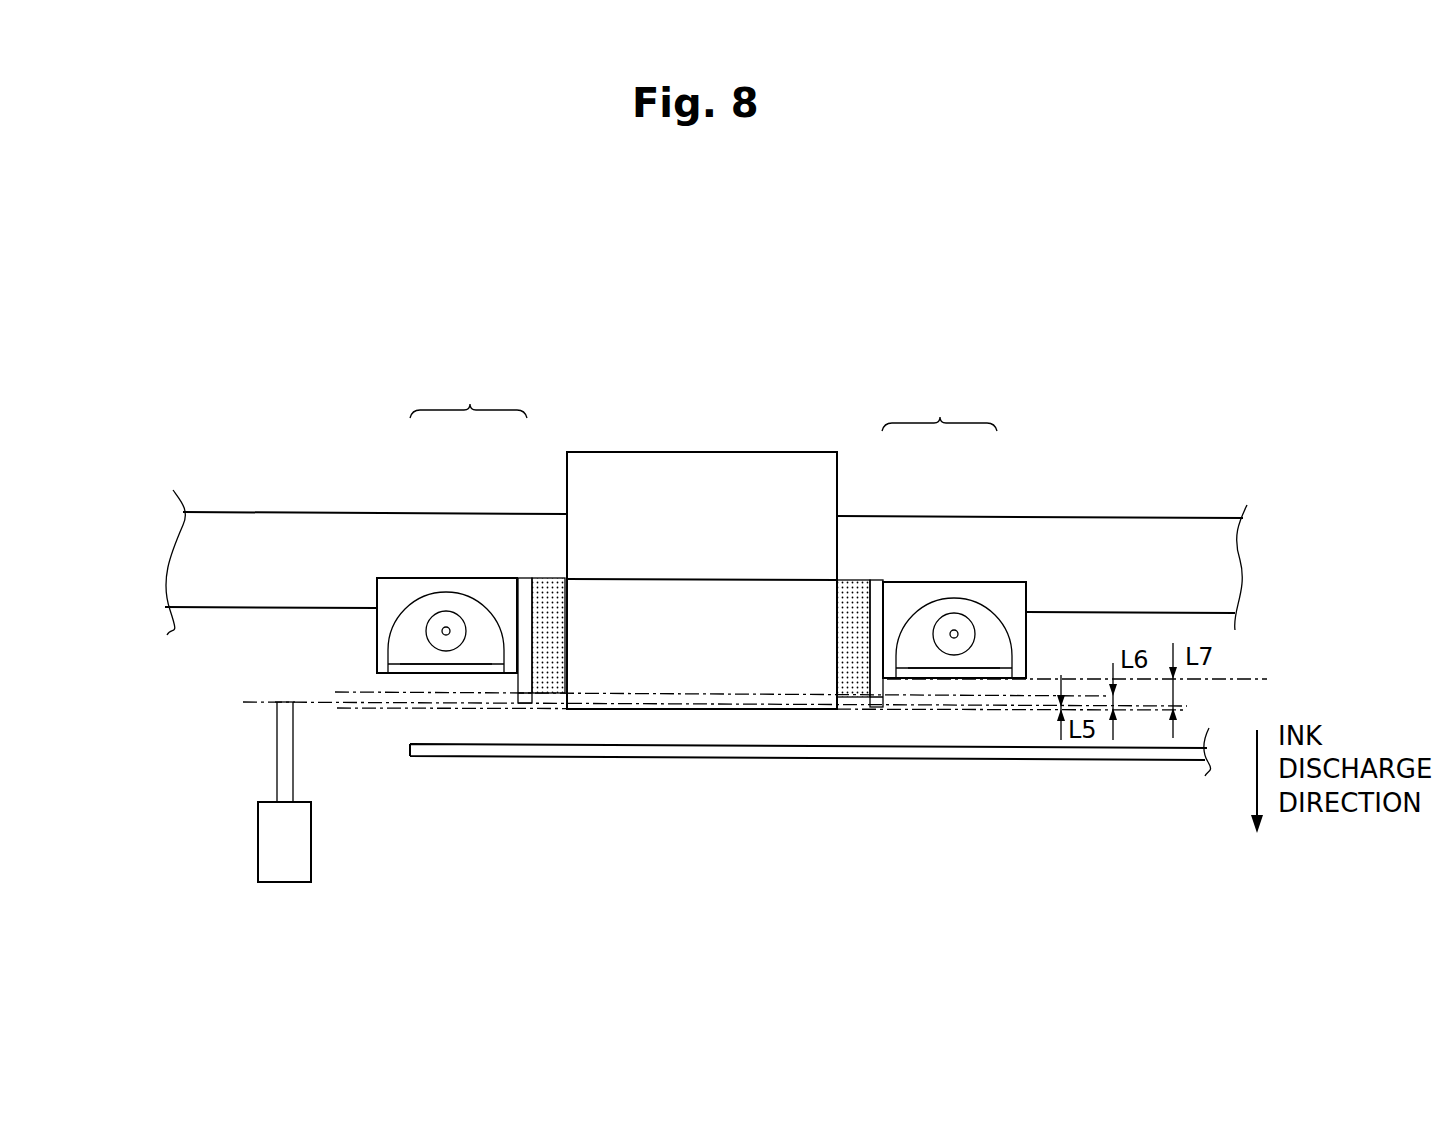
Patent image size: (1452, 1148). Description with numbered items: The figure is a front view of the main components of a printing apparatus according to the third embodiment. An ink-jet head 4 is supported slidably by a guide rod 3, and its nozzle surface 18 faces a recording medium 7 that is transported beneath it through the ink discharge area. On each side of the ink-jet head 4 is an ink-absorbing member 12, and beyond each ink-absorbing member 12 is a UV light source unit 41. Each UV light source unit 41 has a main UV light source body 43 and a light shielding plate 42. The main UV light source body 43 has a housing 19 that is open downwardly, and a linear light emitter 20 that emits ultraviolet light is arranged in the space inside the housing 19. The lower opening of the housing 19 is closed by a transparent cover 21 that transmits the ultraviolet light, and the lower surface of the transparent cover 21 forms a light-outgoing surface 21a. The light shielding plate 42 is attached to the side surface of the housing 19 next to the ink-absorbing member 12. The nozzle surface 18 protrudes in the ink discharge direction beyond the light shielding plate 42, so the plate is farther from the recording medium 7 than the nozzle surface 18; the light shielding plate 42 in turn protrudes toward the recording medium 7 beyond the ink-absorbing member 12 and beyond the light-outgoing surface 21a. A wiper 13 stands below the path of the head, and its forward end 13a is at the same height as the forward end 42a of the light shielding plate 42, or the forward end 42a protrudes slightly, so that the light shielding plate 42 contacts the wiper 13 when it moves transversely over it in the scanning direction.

The guide rod 3 is at (232, 512).
The ink-jet head 4 is at (640, 452).
The recording medium 7 is at (1163, 760).
The ink-absorbing member 12 is at (547, 680).
The wiper 13 is at (276, 766).
The forward end of the wiper 13a is at (287, 713).
The nozzle surface 18 is at (697, 708).
The housing 19 is at (377, 592).
The linear light emitter 20 is at (428, 628).
The transparent cover 21 is at (407, 670).
The light-outgoing surface 21a is at (452, 670).
The UV light source unit 41 is at (703, 402).
The light shielding plate 42 is at (523, 585).
The forward end of the light shielding plate 42a is at (523, 693).
The main UV light source body 43 is at (412, 580).